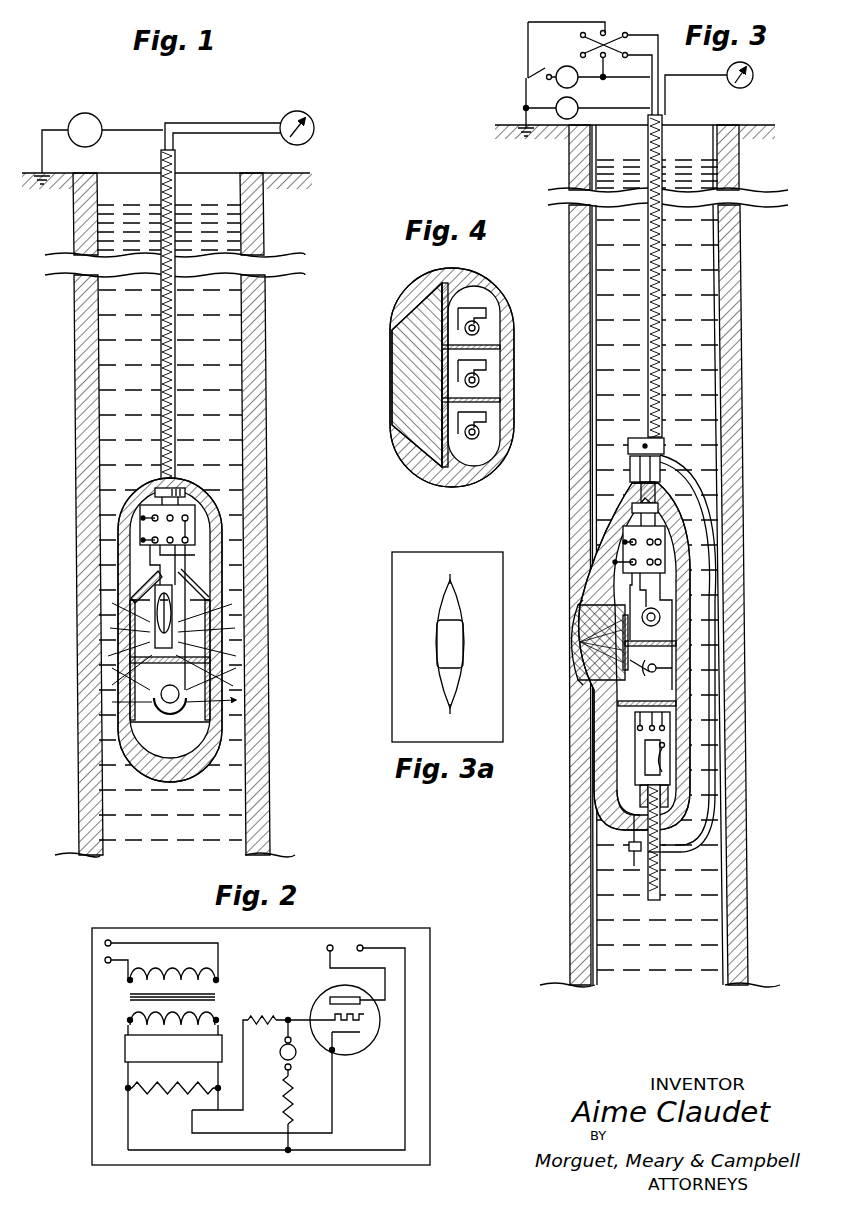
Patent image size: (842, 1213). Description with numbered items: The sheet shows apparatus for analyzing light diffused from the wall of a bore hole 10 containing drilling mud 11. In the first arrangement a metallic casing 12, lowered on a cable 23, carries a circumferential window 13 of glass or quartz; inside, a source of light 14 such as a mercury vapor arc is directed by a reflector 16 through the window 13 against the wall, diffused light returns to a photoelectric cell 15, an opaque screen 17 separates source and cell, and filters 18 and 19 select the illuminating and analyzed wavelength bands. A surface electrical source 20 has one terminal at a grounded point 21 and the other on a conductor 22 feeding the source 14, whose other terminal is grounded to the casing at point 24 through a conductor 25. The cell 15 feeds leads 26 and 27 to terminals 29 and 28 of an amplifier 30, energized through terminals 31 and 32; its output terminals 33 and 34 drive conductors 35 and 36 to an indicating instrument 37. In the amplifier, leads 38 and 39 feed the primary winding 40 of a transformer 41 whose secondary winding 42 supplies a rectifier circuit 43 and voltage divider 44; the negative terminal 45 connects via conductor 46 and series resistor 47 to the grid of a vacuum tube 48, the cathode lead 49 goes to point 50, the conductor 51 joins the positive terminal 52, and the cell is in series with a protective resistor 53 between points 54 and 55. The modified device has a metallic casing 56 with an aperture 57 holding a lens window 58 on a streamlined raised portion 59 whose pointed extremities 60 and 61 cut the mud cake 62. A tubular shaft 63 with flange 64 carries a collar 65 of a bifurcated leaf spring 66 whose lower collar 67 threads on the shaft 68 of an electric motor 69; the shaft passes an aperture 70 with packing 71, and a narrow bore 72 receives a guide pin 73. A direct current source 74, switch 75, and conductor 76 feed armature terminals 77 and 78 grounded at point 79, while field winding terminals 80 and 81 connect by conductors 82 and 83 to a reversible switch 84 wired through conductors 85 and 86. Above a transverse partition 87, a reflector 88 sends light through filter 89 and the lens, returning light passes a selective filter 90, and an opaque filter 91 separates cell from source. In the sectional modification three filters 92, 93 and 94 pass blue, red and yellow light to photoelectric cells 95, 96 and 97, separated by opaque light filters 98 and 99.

In FIG. 1, the bore hole 10 is at (228, 778).
In FIG. 3, the bore hole 10 is at (705, 482).
In FIG. 1, the drilling mud 11 is at (118, 350).
In FIG. 1, the metallic casing 12 is at (220, 600).
In FIG. 1, the window 13 is at (125, 682).
In FIG. 1, the source of light 14 is at (205, 605).
In FIG. 3, the source of light 14 is at (654, 680).
In FIG. 1, the photoelectric cell 15 is at (167, 700).
In FIG. 2, the photoelectric cell 15 is at (270, 1055).
In FIG. 3, the photoelectric cell 15 is at (658, 616).
In FIG. 1, the reflector 16 is at (148, 582).
In FIG. 1, the opaque screen 17 is at (164, 622).
In FIG. 1, the filter 18 is at (157, 607).
In FIG. 1, the filter 19 is at (158, 708).
In FIG. 1, the electrical source 20 is at (84, 113).
In FIG. 1, the grounded point 21 is at (38, 170).
In FIG. 1, the conductor 22 is at (128, 130).
In FIG. 1, the cable 23 is at (160, 303).
In FIG. 3, the cable 23 is at (645, 245).
In FIG. 1, the grounding point 24 is at (140, 550).
In FIG. 1, the conductor 25 is at (140, 600).
In FIG. 1, the lead 26 is at (210, 660).
In FIG. 2, the lead 26 is at (291, 1040).
In FIG. 1, the lead 27 is at (190, 690).
In FIG. 2, the lead 27 is at (291, 1069).
In FIG. 1, the amplifier terminal 28 is at (195, 558).
In FIG. 1, the amplifier terminal 29 is at (197, 580).
In FIG. 1, the amplifier 30 is at (195, 526).
In FIG. 2, the amplifier 30 is at (425, 942).
In FIG. 3, the amplifier 30 is at (667, 548).
In FIG. 1, the energizing terminal 31 is at (152, 518).
In FIG. 2, the energizing terminal 31 is at (104, 943).
In FIG. 1, the energizing terminal 32 is at (152, 540).
In FIG. 2, the energizing terminal 32 is at (104, 960).
In FIG. 1, the output terminal 33 is at (187, 518).
In FIG. 2, the output terminal 33 is at (332, 944).
In FIG. 1, the output terminal 34 is at (189, 541).
In FIG. 2, the output terminal 34 is at (364, 944).
In FIG. 1, the conductor 35 is at (200, 123).
In FIG. 1, the conductor 36 is at (195, 134).
In FIG. 1, the potential difference indicating instrument 37 is at (305, 116).
In FIG. 3, the potential difference indicating instrument 37 is at (751, 70).
In FIG. 2, the lead 38 is at (148, 943).
In FIG. 2, the lead 39 is at (126, 976).
In FIG. 2, the primary winding 40 is at (170, 975).
In FIG. 2, the transformer 41 is at (120, 998).
In FIG. 2, the secondary winding 42 is at (205, 1016).
In FIG. 2, the rectifier circuit 43 is at (125, 1048).
In FIG. 2, the voltage divider 44 is at (148, 1096).
In FIG. 2, the negative terminal 45 is at (221, 1090).
In FIG. 2, the conductor 46 is at (226, 1114).
In FIG. 2, the series resistor 47 is at (262, 1014).
In FIG. 2, the vacuum tube 48 is at (378, 1018).
In FIG. 2, the lead 49 is at (332, 1090).
In FIG. 2, the point 50 is at (190, 1096).
In FIG. 2, the conductor 51 is at (405, 1104).
In FIG. 2, the positive terminal 52 is at (125, 1088).
In FIG. 2, the protective resistor 53 is at (283, 1105).
In FIG. 2, the grid connection point 54 is at (289, 1016).
In FIG. 2, the connection point 55 is at (287, 1154).
In FIG. 4, the metallic casing 56 is at (482, 283).
In FIG. 3, the metallic casing 56 is at (684, 562).
In FIG. 3, the aperture 57 is at (583, 672).
In FIG. 4, the window 58 is at (420, 443).
In FIG. 3A, the window 58 is at (440, 645).
In FIG. 3, the window 58 is at (586, 648).
In FIG. 3A, the raised portion 59 is at (440, 612).
In FIG. 3A, the pointed extremity 60 is at (447, 590).
In FIG. 3A, the pointed extremity 61 is at (448, 700).
In FIG. 3, the mud cake 62 is at (578, 232).
In FIG. 3, the tubular shaft 63 is at (630, 468).
In FIG. 3, the flange 64 is at (648, 445).
In FIG. 3, the collar 65 is at (660, 458).
In FIG. 3, the bifurcated leaf spring 66 is at (716, 592).
In FIG. 3, the collar 67 is at (662, 868).
In FIG. 3, the threaded shaft 68 is at (648, 878).
In FIG. 3, the electric motor 69 is at (700, 800).
In FIG. 3, the aperture 70 is at (615, 805).
In FIG. 3, the packing 71 is at (620, 812).
In FIG. 3, the narrow bore 72 is at (634, 846).
In FIG. 3, the pin 73 is at (630, 830).
In FIG. 3, the direct current source 74 is at (578, 85).
In FIG. 3, the switch 75 is at (528, 73).
In FIG. 3, the conductor 76 is at (628, 82).
In FIG. 3, the armature terminal 77 is at (672, 740).
In FIG. 3, the armature terminal 78 is at (664, 778).
In FIG. 3, the grounding point 79 is at (668, 760).
In FIG. 3, the field winding terminal 80 is at (645, 745).
In FIG. 3, the field winding terminal 81 is at (640, 760).
In FIG. 3, the conductor 82 is at (628, 60).
In FIG. 3, the conductor 83 is at (628, 50).
In FIG. 3, the reversible switch 84 is at (620, 35).
In FIG. 3, the conductor 85 is at (526, 30).
In FIG. 3, the conductor 86 is at (600, 52).
In FIG. 3, the transverse partition 87 is at (678, 705).
In FIG. 3, the reflector 88 is at (686, 674).
In FIG. 3, the filter 89 is at (684, 664).
In FIG. 3, the selective filter 90 is at (684, 643).
In FIG. 3, the opaque filter 91 is at (686, 652).
In FIG. 4, the filter 92 is at (440, 325).
In FIG. 4, the filter 93 is at (440, 378).
In FIG. 4, the filter 94 is at (440, 423).
In FIG. 4, the photoelectric cell 95 is at (480, 325).
In FIG. 4, the photoelectric cell 96 is at (480, 378).
In FIG. 4, the photoelectric cell 97 is at (480, 430).
In FIG. 4, the opaque light filter 98 is at (495, 347).
In FIG. 4, the opaque light filter 99 is at (495, 400).